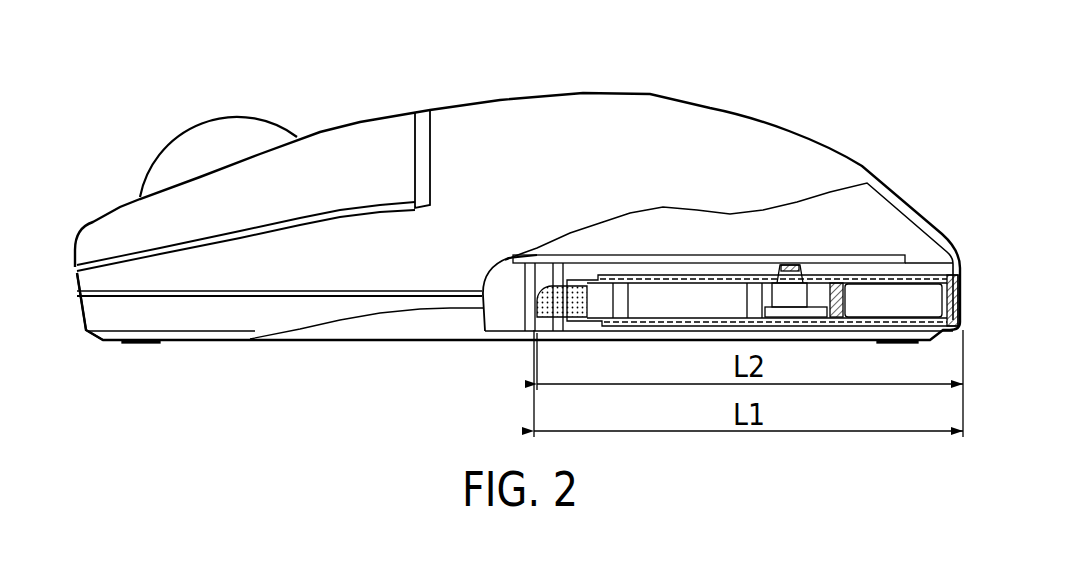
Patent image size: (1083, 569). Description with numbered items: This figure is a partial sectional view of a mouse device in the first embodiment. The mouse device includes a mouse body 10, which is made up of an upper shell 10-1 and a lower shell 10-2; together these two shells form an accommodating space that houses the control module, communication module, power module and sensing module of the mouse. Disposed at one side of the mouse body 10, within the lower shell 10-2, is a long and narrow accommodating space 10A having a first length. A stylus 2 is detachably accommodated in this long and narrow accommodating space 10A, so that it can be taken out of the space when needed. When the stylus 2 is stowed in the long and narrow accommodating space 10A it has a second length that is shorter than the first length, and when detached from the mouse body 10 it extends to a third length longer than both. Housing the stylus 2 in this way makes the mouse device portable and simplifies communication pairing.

The mouse body 10 is at (638, 137).
The upper shell 10-1 is at (497, 128).
The lower shell 10-2 is at (213, 312).
The long and narrow accommodating space 10A is at (877, 258).
The stylus 2 is at (748, 270).